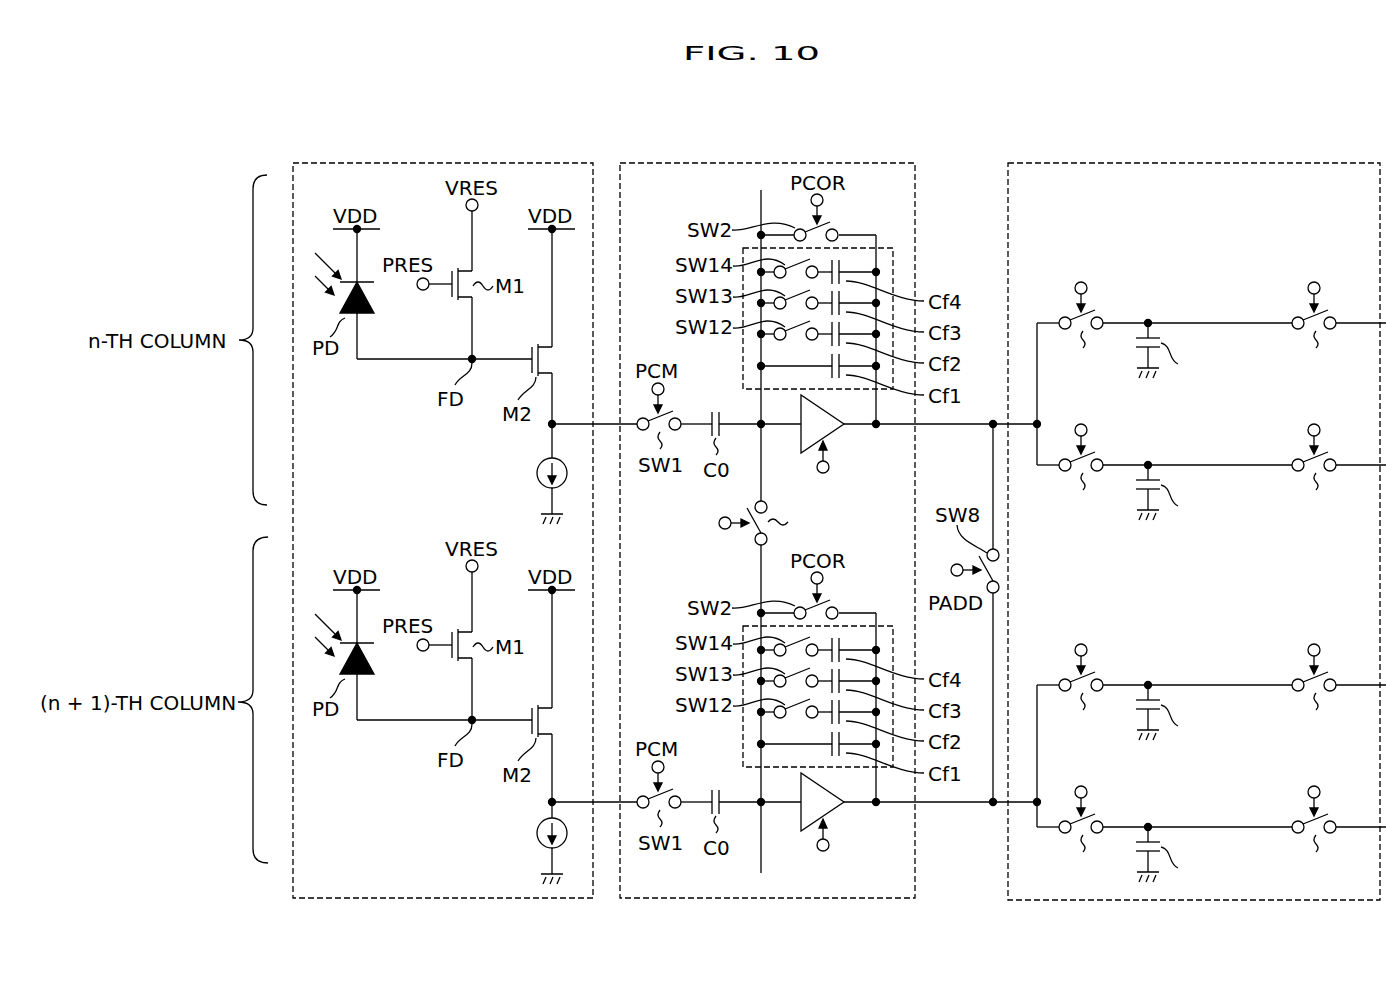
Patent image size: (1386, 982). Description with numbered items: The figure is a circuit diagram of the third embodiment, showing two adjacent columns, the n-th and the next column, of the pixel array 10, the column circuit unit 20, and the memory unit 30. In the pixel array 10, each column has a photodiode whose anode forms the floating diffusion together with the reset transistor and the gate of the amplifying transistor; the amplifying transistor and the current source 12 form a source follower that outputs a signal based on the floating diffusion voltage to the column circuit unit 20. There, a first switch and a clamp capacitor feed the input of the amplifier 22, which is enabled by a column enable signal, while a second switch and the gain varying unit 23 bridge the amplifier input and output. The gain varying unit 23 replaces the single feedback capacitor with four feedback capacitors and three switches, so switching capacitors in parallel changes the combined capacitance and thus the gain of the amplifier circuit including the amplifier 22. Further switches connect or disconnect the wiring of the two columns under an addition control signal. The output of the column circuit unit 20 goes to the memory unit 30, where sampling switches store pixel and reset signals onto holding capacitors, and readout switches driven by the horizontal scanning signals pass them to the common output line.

The pixel array 10 is at (443, 507).
The current source 12 is at (537, 473).
The column circuit unit 20 is at (798, 507).
The amplifier 22 is at (836, 433).
The gain varying unit 23 is at (742, 349).
The memory unit 30 is at (1270, 162).